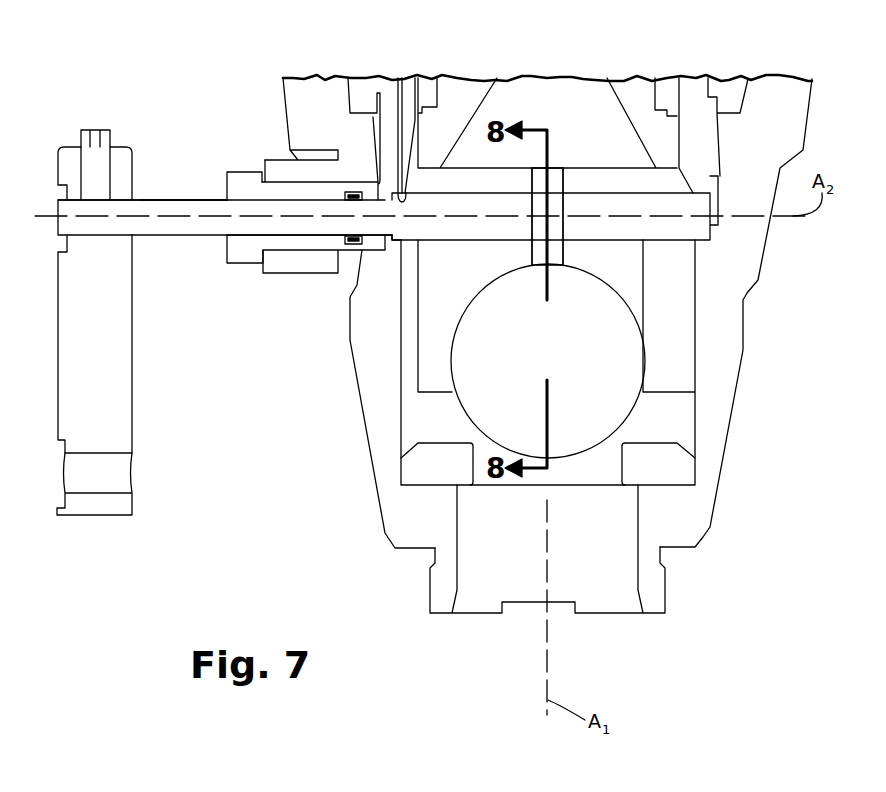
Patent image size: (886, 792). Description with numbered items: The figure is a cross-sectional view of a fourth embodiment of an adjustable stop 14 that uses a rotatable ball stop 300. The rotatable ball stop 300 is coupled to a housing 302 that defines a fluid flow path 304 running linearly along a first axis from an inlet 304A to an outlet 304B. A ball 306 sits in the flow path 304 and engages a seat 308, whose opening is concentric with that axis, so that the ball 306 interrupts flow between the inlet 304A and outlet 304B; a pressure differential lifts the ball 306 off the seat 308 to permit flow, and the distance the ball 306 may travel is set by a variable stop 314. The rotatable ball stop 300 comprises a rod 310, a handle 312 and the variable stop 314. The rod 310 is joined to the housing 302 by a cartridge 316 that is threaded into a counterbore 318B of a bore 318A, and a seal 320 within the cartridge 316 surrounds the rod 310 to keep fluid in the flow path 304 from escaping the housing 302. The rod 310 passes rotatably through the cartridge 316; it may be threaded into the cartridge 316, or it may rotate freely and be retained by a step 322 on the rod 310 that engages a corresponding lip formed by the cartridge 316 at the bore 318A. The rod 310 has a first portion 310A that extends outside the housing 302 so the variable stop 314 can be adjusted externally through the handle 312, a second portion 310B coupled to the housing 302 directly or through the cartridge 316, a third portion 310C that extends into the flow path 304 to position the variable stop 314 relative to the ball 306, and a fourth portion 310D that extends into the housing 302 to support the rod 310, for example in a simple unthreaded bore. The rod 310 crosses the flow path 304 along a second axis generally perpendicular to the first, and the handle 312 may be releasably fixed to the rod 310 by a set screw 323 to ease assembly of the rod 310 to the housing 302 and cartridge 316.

The rotatable ball stop 300 is at (50, 136).
The set screw 323 is at (97, 160).
The adjustable stop 14 is at (165, 190).
The rod 310 is at (176, 240).
The first portion 310A is at (204, 217).
The second portion 310B is at (292, 222).
The third portion 310C is at (477, 207).
The fourth portion 310D is at (685, 227).
The handle 312 is at (98, 409).
The cartridge 316 is at (243, 253).
The seal 320 is at (348, 250).
The bore 318A is at (397, 237).
The counterbore 318B is at (372, 245).
The step 322 is at (397, 110).
The housing 302 is at (325, 103).
The fluid flow path 304 is at (581, 313).
The inlet 304A is at (493, 583).
The outlet 304B is at (563, 100).
The ball 306 is at (548, 361).
The seat 308 is at (652, 460).
The variable stop 314 is at (557, 188).